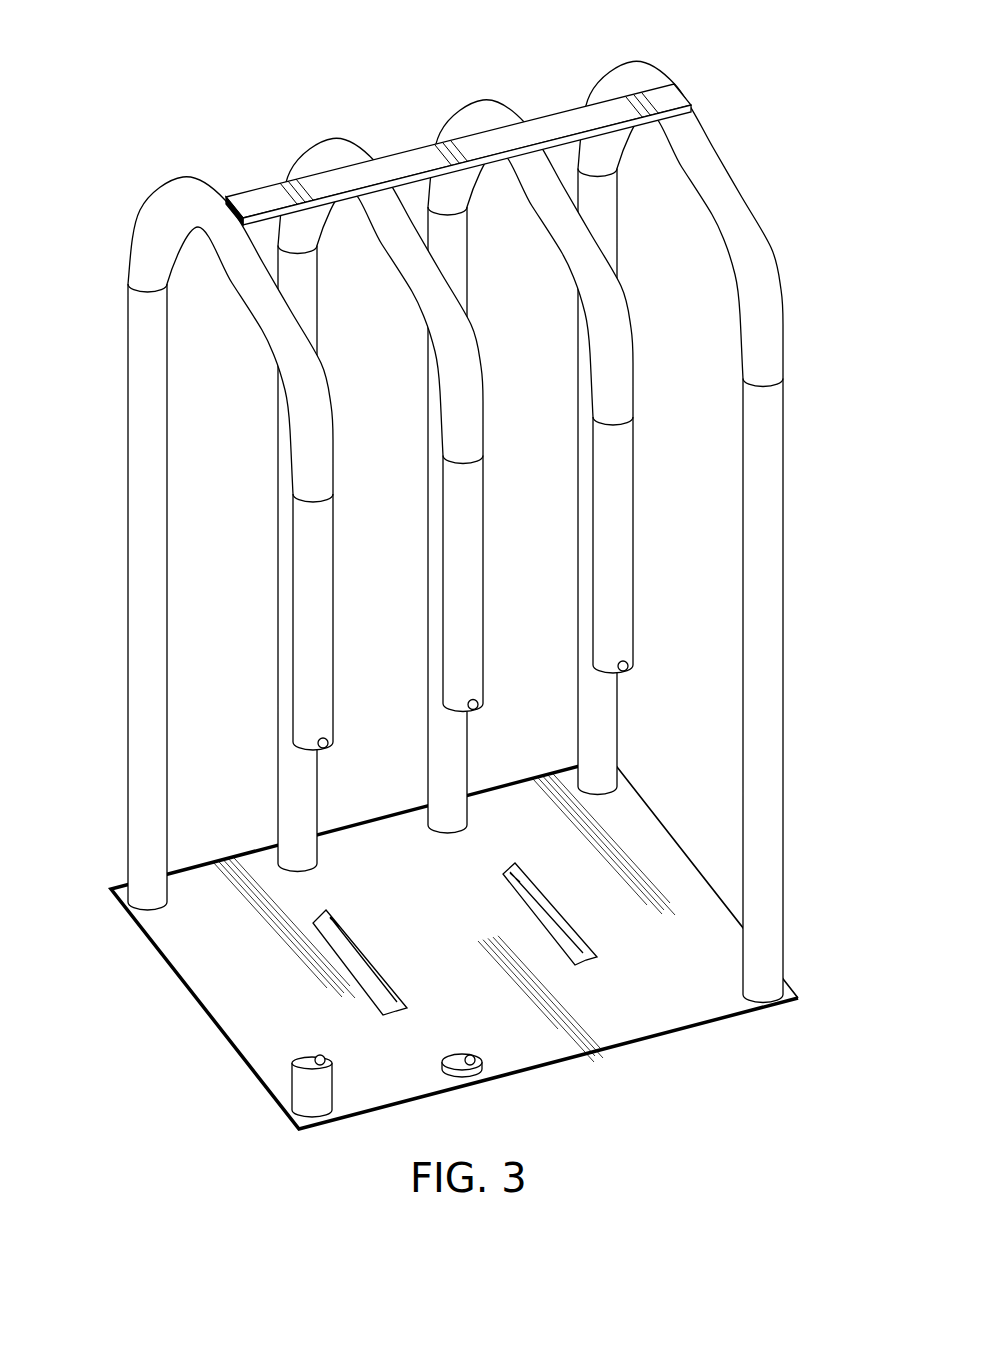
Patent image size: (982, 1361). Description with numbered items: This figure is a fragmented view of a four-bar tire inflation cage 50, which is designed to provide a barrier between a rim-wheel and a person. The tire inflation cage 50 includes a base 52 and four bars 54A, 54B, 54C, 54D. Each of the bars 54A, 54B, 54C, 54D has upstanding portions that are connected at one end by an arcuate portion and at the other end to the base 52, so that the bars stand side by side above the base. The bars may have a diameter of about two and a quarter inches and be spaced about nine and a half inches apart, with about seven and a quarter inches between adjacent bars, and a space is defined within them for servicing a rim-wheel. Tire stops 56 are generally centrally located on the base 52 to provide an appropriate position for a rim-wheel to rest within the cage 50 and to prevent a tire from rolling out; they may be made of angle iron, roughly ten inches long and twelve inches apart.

The tire inflation cage 50 is at (148, 144).
The base 52 is at (247, 1003).
The bar 54A is at (138, 560).
The bar 54B is at (287, 640).
The bar 54C is at (620, 507).
The bar 54D is at (763, 480).
The tire stop 56 is at (513, 866).